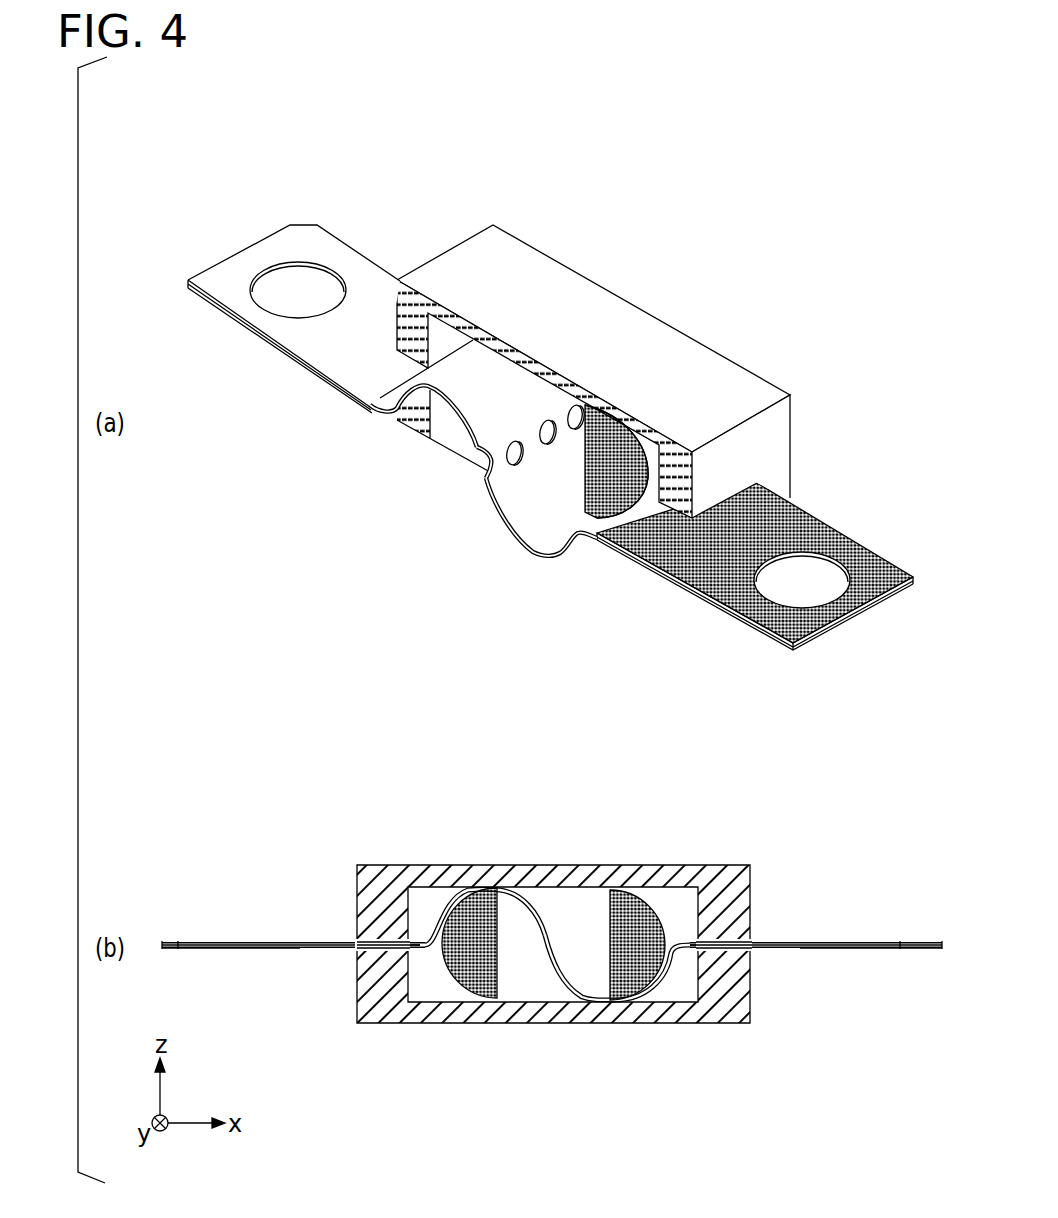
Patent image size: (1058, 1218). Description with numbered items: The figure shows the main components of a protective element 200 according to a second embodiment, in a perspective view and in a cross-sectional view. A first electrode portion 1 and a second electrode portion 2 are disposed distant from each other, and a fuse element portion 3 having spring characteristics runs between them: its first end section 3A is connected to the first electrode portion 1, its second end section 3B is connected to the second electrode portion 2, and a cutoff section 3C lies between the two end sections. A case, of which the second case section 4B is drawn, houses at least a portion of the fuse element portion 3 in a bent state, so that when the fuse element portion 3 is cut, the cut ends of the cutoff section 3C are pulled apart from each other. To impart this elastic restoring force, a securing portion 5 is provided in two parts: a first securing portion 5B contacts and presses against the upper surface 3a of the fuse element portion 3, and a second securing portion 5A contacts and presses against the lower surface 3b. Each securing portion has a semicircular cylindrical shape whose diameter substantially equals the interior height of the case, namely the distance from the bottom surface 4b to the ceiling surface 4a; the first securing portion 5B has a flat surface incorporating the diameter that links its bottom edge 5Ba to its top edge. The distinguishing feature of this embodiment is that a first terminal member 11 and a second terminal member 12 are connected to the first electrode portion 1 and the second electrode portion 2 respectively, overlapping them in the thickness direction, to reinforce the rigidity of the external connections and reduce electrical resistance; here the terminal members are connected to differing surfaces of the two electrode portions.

The protective element 200 is at (779, 170).
The first electrode portion 1 is at (267, 253).
The first terminal member 11 is at (258, 950).
The second terminal member 12 is at (810, 535).
The second electrode portion 2 is at (845, 950).
The fuse element portion 3 is at (510, 730).
The first end section 3A is at (430, 398).
The second end section 3B is at (493, 522).
The cutoff section 3C is at (462, 475).
The upper surface 3a is at (543, 502).
The lower surface 3b is at (523, 900).
The second case section 4B is at (597, 318).
The ceiling surface 4a is at (666, 889).
The bottom surface 4b is at (666, 997).
The securing portion 5 is at (553, 746).
The second securing portion 5A is at (475, 970).
The first securing portion 5B is at (574, 702).
The bottom edge 5Ba is at (653, 480).